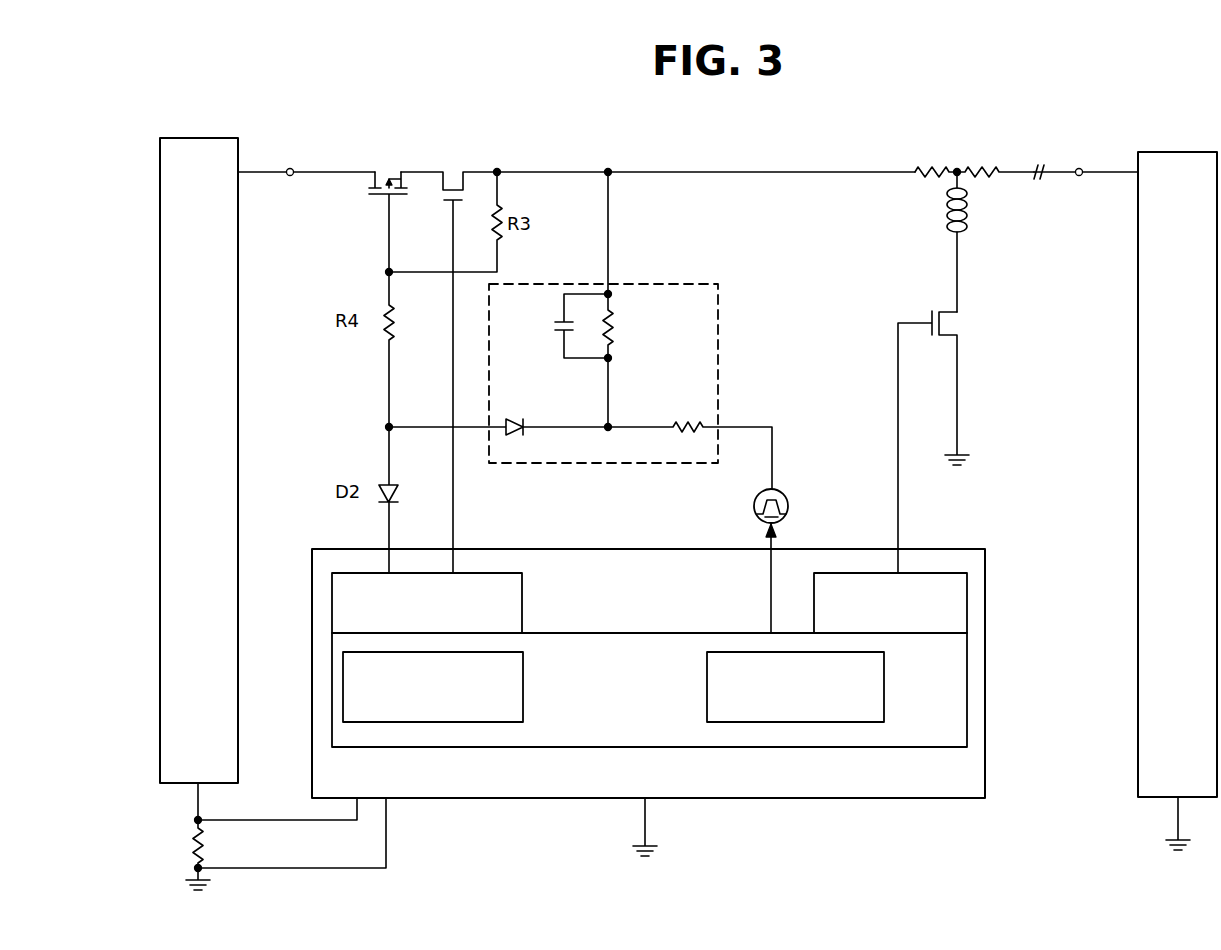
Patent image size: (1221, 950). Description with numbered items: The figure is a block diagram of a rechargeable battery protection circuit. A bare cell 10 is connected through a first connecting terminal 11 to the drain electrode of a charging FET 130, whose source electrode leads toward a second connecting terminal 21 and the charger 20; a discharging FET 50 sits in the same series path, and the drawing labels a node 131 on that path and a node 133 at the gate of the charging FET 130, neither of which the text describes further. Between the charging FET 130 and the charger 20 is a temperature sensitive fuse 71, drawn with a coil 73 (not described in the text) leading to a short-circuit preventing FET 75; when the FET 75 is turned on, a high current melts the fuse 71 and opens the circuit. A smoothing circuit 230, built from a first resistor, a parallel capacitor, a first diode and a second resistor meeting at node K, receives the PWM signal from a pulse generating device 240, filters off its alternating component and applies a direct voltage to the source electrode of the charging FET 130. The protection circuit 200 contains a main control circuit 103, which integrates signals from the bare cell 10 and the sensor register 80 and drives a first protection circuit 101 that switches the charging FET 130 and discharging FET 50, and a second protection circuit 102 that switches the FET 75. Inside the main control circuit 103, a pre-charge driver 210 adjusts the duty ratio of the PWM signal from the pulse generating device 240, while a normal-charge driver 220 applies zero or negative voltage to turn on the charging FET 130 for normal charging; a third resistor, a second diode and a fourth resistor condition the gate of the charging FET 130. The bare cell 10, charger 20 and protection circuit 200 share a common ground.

The bare cell 10 is at (203, 138).
The first connecting terminal 11 is at (291, 168).
The charging FET 130 is at (381, 166).
The discharging FET 50 is at (453, 166).
The node between FETs 131 is at (497, 172).
The gate node of charge FET 133 is at (386, 272).
The smoothing circuit 230 is at (718, 332).
The pulse generating device 240 is at (789, 507).
The temperature sensitive fuse 71 is at (985, 172).
The heater coil 73 is at (968, 214).
The short-circuit preventing FET 75 is at (952, 324).
The second connecting terminal 21 is at (1080, 168).
The charger 20 is at (1173, 152).
The protection circuit 200 is at (468, 800).
The first protection circuit 101 is at (522, 597).
The second protection circuit 102 is at (967, 597).
The main control circuit 103 is at (649, 690).
The normal-charge driver 220 is at (523, 690).
The pre-charge driver 210 is at (884, 690).
The sensor register 80 is at (188, 838).